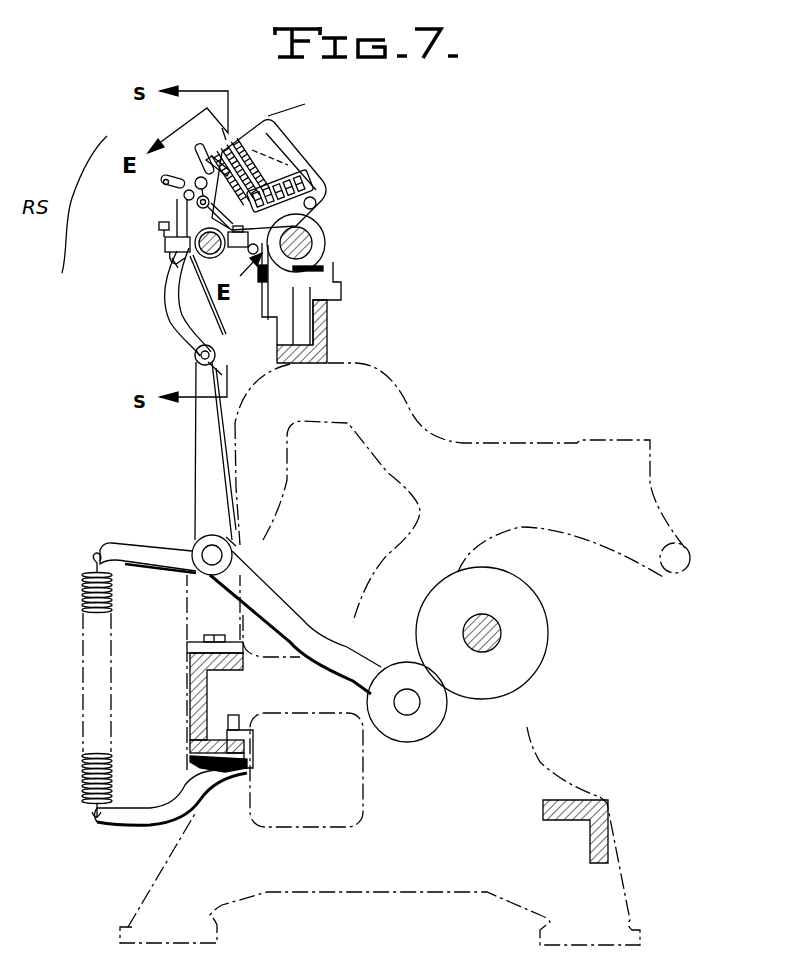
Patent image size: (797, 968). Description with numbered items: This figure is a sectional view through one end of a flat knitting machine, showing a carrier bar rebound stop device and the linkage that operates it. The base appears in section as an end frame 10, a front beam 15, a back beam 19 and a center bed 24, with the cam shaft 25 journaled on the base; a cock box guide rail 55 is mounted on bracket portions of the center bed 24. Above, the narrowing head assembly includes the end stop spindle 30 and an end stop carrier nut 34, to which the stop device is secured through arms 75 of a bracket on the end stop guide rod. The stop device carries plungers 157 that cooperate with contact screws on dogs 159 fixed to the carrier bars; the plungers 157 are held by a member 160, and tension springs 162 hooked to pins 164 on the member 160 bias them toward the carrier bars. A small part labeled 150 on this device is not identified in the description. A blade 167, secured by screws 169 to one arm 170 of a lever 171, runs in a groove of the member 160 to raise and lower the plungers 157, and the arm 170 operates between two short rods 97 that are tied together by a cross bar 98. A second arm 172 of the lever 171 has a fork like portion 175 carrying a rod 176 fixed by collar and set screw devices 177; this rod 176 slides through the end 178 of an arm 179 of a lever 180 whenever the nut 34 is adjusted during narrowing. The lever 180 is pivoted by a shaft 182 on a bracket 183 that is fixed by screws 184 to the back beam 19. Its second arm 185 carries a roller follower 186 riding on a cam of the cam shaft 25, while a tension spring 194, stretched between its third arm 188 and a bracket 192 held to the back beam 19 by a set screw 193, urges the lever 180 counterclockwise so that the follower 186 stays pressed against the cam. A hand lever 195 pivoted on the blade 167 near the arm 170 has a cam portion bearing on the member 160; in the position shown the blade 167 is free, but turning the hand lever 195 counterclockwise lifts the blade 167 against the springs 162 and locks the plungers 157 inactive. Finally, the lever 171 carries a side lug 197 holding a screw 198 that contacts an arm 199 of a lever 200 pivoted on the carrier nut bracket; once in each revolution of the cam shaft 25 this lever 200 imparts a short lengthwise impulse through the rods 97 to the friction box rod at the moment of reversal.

The end frames 10 is at (432, 885).
The front beam 15 is at (604, 838).
The back beam 19 is at (189, 708).
The center bed 24 is at (330, 343).
The cam shaft 25 is at (501, 633).
The end stop spindle 30 is at (284, 252).
The end stop carrier nuts 34 is at (322, 243).
The cock box guide rail 55 is at (230, 230).
The arms 75 is at (228, 248).
The rods 97 is at (163, 181).
The cross bar 98 is at (186, 195).
The knob 150 is at (318, 203).
The plungers 157 is at (243, 136).
The dogs 159 is at (308, 180).
The member 160 is at (299, 162).
The tension springs 162 is at (280, 136).
The pins 164 is at (292, 150).
The blade 167 is at (523, 598).
The screws 169 is at (208, 160).
The arm 170 is at (196, 176).
The lever 171 is at (172, 263).
The arm 172 is at (170, 320).
The fork like portion 175 is at (207, 318).
The rod 176 is at (214, 353).
The collar and set screw devices 177 is at (194, 354).
The end 178 is at (215, 361).
The arm 179 is at (202, 437).
The lever 180 is at (207, 550).
The shaft 182 is at (229, 538).
The bracket 183 is at (190, 643).
The screws 184 is at (213, 636).
The second arm 185 is at (277, 595).
The roller follower 186 is at (411, 742).
The third arm 188 is at (122, 548).
The bracket 192 is at (142, 818).
The set screw 193 is at (231, 716).
The tension spring 194 is at (82, 592).
The hand lever 195 is at (226, 140).
The side lug 197 is at (165, 244).
The screw 198 is at (158, 228).
The arm 199 is at (171, 255).
The lever 200 is at (178, 284).